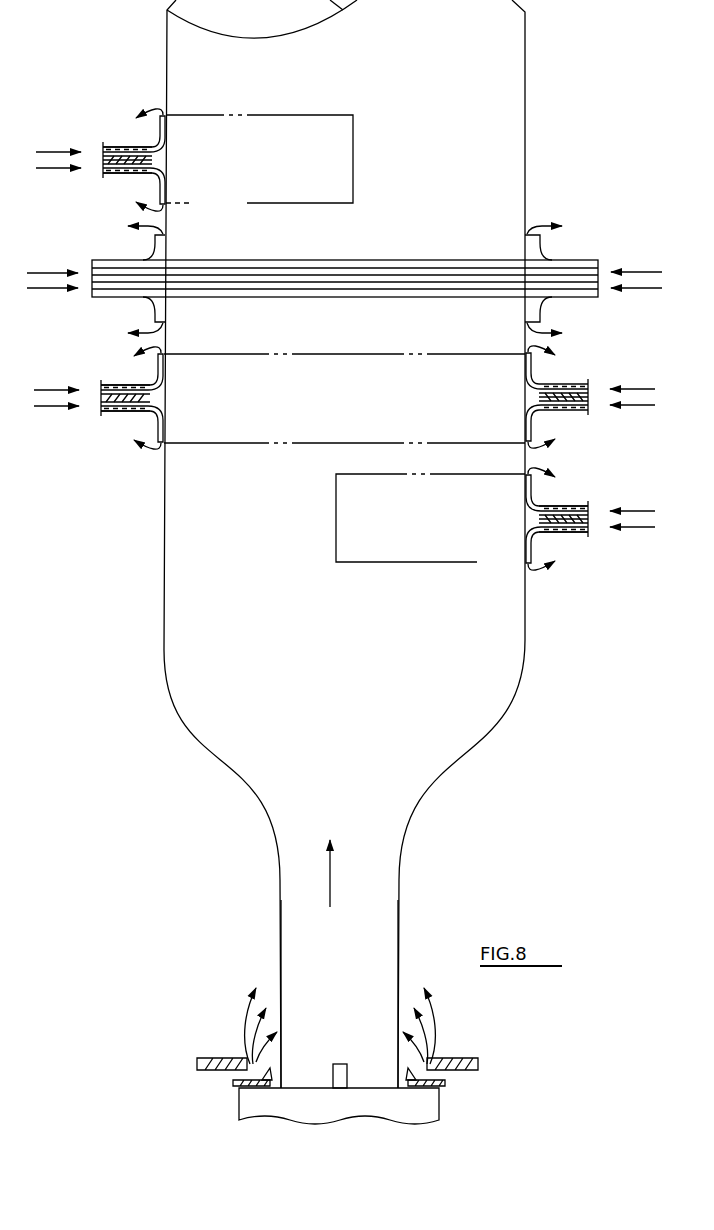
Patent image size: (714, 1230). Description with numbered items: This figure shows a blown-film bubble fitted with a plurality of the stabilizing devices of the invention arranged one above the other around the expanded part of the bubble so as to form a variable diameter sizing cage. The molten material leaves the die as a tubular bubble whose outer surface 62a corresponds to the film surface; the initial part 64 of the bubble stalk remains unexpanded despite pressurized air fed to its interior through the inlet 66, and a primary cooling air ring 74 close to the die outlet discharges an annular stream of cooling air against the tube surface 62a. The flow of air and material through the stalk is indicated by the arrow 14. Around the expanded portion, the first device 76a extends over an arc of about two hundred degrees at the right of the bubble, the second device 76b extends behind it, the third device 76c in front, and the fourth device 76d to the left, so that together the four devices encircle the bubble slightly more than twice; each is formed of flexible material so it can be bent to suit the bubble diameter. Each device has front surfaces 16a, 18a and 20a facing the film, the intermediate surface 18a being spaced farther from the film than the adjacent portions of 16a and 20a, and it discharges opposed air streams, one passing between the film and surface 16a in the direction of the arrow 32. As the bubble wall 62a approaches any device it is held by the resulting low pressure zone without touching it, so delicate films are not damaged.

The gas flow direction 14 is at (330, 886).
The front surface of first member 16a is at (163, 128).
The front surface of intermediate member 18a is at (163, 157).
The front surface of third member 20a is at (163, 193).
The arrow 32 is at (525, 390).
The outer surface of bubble 62a is at (165, 650).
The initial part of bubble stalk 64 is at (398, 915).
The inlet 66 is at (348, 1078).
The primary cooling air ring 74 is at (455, 1058).
The first device 76a is at (590, 567).
The second device 76b is at (238, 452).
The third device 76c is at (465, 245).
The fourth device 76d is at (104, 98).